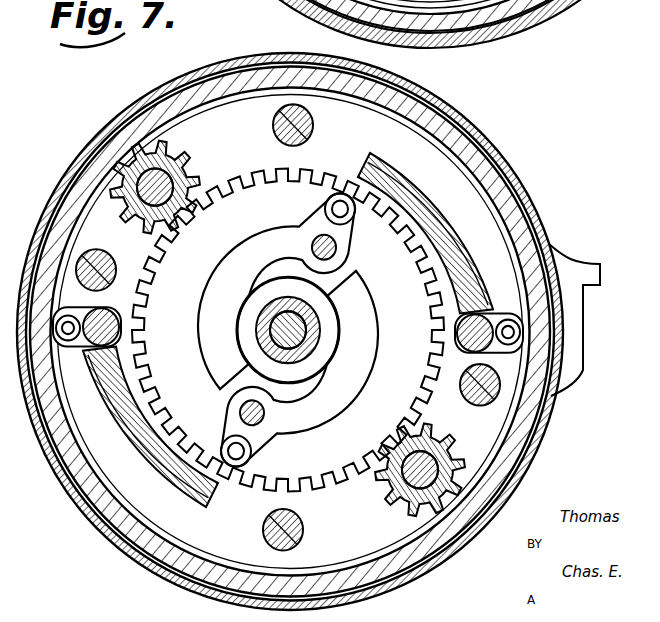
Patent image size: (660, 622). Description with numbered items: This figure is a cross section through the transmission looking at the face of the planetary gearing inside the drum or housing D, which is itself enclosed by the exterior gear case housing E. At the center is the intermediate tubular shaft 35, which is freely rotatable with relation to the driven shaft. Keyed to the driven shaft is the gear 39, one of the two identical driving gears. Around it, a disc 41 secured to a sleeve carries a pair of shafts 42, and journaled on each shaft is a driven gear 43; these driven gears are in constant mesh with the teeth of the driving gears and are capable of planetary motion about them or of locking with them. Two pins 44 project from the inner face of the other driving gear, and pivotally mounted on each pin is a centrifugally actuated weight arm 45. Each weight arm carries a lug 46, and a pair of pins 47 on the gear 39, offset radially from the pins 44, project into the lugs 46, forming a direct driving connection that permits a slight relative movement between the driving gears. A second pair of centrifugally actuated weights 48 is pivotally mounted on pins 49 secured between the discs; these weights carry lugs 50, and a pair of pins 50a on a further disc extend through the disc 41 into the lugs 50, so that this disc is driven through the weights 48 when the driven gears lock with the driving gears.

The intermediate tubular shaft 35 is at (331, 330).
The gear 39 is at (288, 318).
The disc 41 is at (288, 327).
The shafts 42 is at (287, 325).
The gears 43 is at (287, 345).
The pins 44 is at (290, 330).
The centrifugally actuated weight arm 45 is at (296, 329).
The lug 46 is at (288, 329).
The pins 47 is at (289, 330).
The centrifugally actuated weights 48 is at (288, 330).
The pins 49 is at (288, 344).
The lugs 50 is at (337, 320).
The pins 50a is at (342, 334).
The drum or housing D is at (445, 115).
The exterior housing E is at (478, 130).